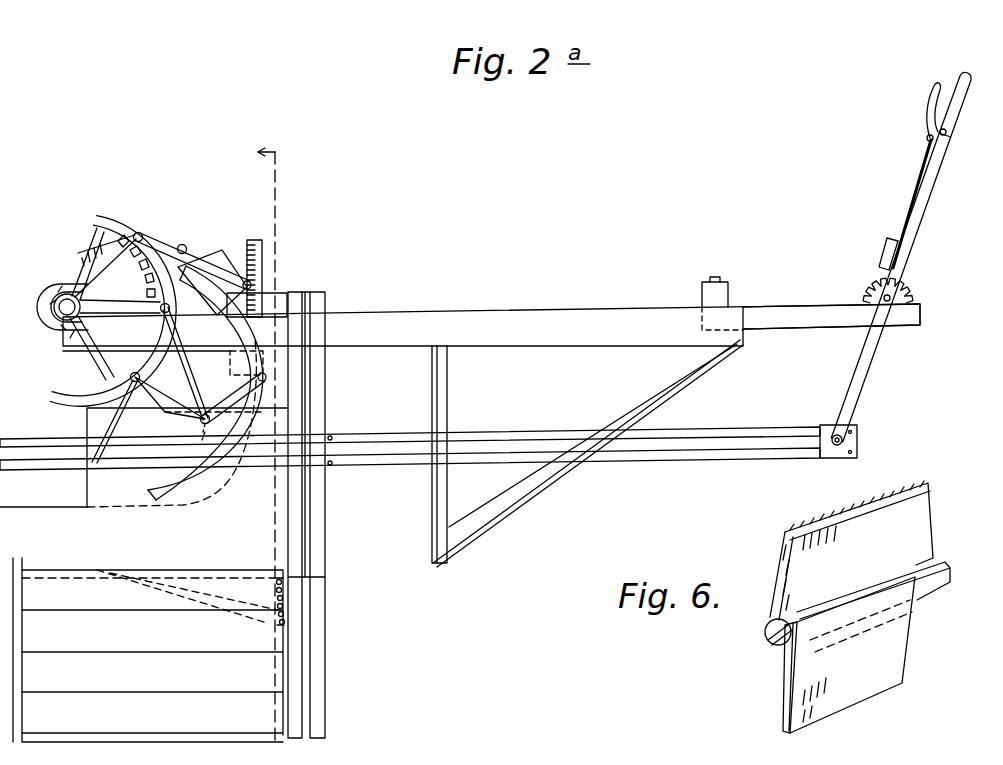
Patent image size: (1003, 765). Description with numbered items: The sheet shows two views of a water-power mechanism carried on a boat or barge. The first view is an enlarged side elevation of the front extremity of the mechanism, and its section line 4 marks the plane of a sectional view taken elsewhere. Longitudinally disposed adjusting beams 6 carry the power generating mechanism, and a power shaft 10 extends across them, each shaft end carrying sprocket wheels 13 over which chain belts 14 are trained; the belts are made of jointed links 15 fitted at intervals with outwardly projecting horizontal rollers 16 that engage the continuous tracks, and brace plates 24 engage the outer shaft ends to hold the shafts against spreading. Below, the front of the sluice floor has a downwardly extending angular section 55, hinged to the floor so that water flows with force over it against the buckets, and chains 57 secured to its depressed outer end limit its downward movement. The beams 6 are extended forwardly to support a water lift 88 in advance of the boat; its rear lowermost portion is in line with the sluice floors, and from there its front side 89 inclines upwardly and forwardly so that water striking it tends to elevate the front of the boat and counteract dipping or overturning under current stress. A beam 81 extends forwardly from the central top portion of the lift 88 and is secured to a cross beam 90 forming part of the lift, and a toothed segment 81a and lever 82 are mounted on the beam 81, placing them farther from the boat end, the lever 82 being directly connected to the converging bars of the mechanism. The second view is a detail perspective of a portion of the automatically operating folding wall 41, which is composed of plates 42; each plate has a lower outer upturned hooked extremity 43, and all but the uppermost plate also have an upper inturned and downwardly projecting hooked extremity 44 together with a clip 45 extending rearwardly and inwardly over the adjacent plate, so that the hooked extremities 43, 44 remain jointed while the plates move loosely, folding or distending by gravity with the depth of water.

In FIG. 2A, the section line 4 is at (271, 441).
In FIG. 2A, the adjusting beams 6 is at (492, 323).
In FIG. 2A, the power shafts 10 is at (60, 312).
In FIG. 2A, the sprocket wheels 13 is at (127, 268).
In FIG. 2A, the chain belts 14 is at (130, 230).
In FIG. 2A, the jointed links 15 is at (175, 373).
In FIG. 2A, the horizontal rollers 16 is at (170, 314).
In FIG. 2A, the brace plates 24 is at (58, 290).
In FIG. 2A, the downwardly extending angular section 55 is at (230, 608).
In FIG. 2A, the chains 57 is at (276, 582).
In FIG. 2A, the beam 81 is at (775, 313).
In FIG. 2A, the toothed segment 81a is at (866, 298).
In FIG. 2A, the lever 82 is at (873, 350).
In FIG. 2A, the water lift 88 is at (623, 395).
In FIG. 2A, the front side 89 is at (508, 500).
In FIG. 2A, the cross beam 90 is at (704, 294).
In FIG. 6, the folding wall 41 is at (871, 551).
In FIG. 6, the plates 42 is at (922, 515).
In FIG. 6, the lower outer upturned hooked extremity 43 is at (787, 653).
In FIG. 6, the upper inturned hooked extremity 44 is at (852, 593).
In FIG. 6, the clip 45 is at (778, 639).